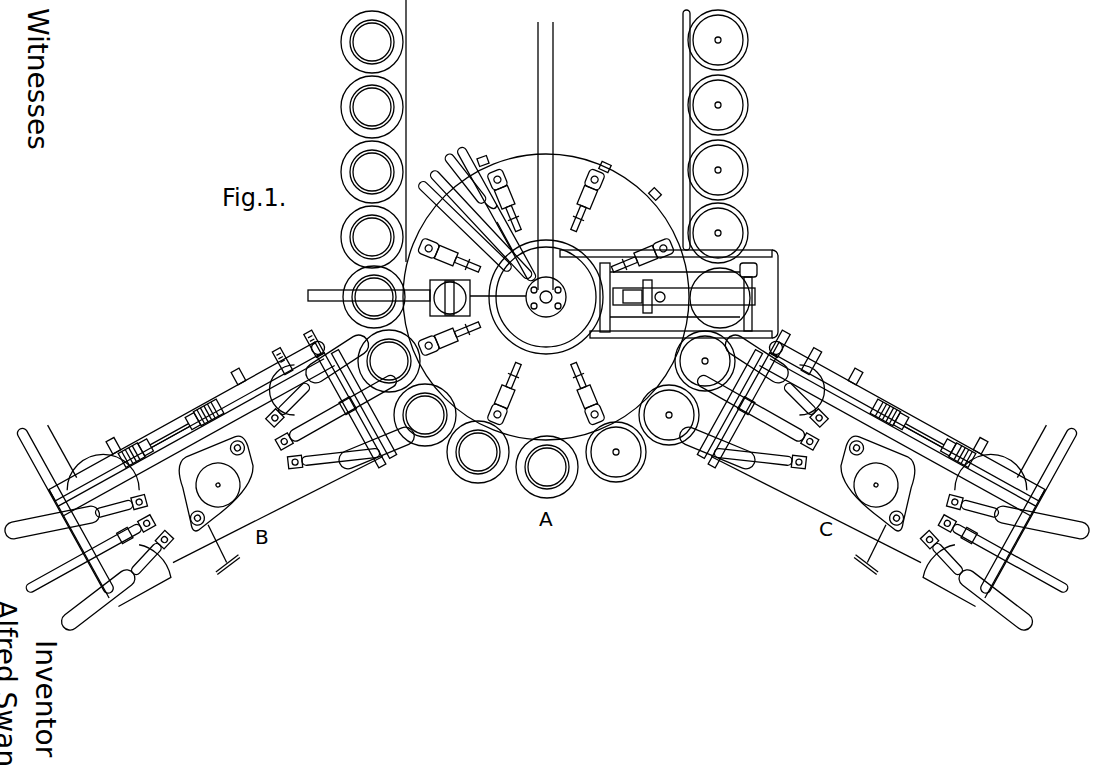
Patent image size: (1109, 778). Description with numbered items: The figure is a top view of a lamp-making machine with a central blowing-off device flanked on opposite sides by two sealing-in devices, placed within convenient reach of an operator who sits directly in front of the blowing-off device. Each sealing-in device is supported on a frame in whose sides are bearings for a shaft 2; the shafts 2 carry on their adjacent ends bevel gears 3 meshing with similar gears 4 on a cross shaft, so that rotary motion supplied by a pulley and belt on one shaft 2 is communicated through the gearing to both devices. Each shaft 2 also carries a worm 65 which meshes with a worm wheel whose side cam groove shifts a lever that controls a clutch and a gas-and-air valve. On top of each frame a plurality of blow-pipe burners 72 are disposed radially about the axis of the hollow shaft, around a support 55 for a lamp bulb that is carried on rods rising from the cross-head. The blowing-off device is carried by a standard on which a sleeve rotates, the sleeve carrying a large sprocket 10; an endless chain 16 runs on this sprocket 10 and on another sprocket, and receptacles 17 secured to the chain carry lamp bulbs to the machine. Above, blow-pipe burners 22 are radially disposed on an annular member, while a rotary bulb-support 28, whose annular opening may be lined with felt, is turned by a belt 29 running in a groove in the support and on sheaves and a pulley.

The shaft 2 is at (237, 405).
The bevel gear 3 is at (282, 356).
The bevel gear 4 is at (312, 340).
The sprocket 10 is at (490, 165).
The endless chain 16 is at (404, 81).
The receptacle 17 is at (626, 472).
The blow-pipe burner 22 is at (568, 368).
The rotary bulb-support 28 is at (524, 326).
The belt 29 is at (608, 251).
The support 55 is at (243, 463).
The worm 65 is at (200, 412).
The blow-pipe burner 72 is at (170, 551).